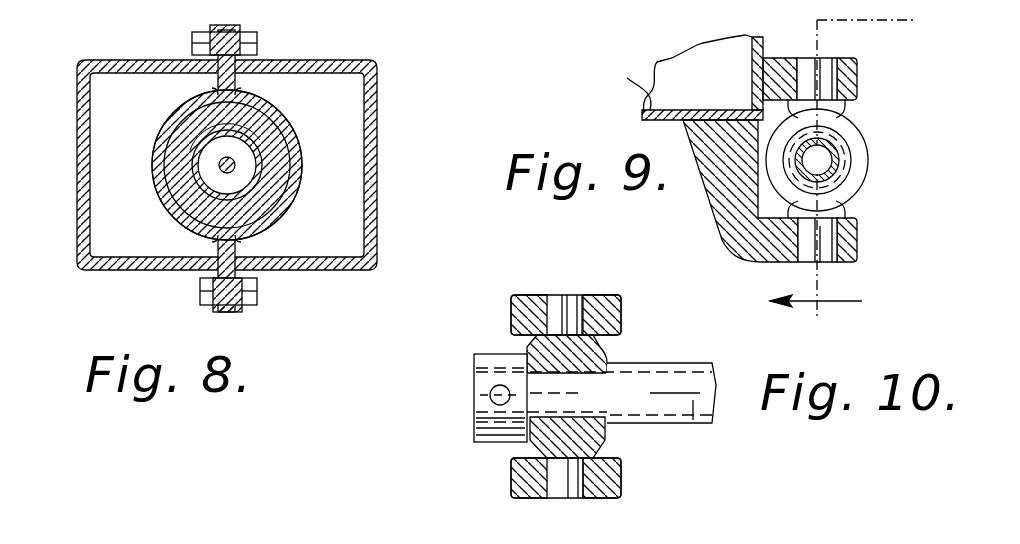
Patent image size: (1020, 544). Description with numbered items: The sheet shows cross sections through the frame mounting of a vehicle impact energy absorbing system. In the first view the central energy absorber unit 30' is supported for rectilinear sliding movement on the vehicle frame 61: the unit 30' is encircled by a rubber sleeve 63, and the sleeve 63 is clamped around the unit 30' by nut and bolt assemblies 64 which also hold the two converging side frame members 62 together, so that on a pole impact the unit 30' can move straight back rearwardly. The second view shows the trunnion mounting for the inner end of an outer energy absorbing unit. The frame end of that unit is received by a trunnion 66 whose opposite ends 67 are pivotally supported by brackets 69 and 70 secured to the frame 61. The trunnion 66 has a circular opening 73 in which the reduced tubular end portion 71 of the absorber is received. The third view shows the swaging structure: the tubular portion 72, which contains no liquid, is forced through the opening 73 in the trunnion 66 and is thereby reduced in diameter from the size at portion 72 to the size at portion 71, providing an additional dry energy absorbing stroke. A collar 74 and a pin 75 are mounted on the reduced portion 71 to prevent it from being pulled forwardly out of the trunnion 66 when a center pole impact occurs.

In FIG. 8, the energy absorber unit 30' is at (245, 169).
In FIG. 9, the vehicle frame 61 is at (668, 68).
In FIG. 8, the side frame members 62 is at (78, 150).
In FIG. 8, the rubber sleeve 63 is at (273, 162).
In FIG. 8, the nut and bolt assemblies 64 is at (245, 43).
In FIG. 9, the trunnion 66 is at (856, 125).
In FIG. 10, the trunnion 66 is at (558, 333).
In FIG. 9, the trunnion ends 67 is at (822, 63).
In FIG. 10, the trunnion ends 67 is at (573, 298).
In FIG. 9, the bracket 69 is at (858, 72).
In FIG. 10, the bracket 69 is at (622, 312).
In FIG. 9, the bracket 70 is at (860, 238).
In FIG. 10, the bracket 70 is at (512, 475).
In FIG. 9, the reduced tubular end portion 71 is at (798, 170).
In FIG. 10, the reduced tubular end portion 71 is at (553, 373).
In FIG. 10, the tubular portion 72 is at (695, 417).
In FIG. 9, the circular opening 73 is at (833, 160).
In FIG. 10, the collar 74 is at (480, 362).
In FIG. 10, the pin 75 is at (498, 398).